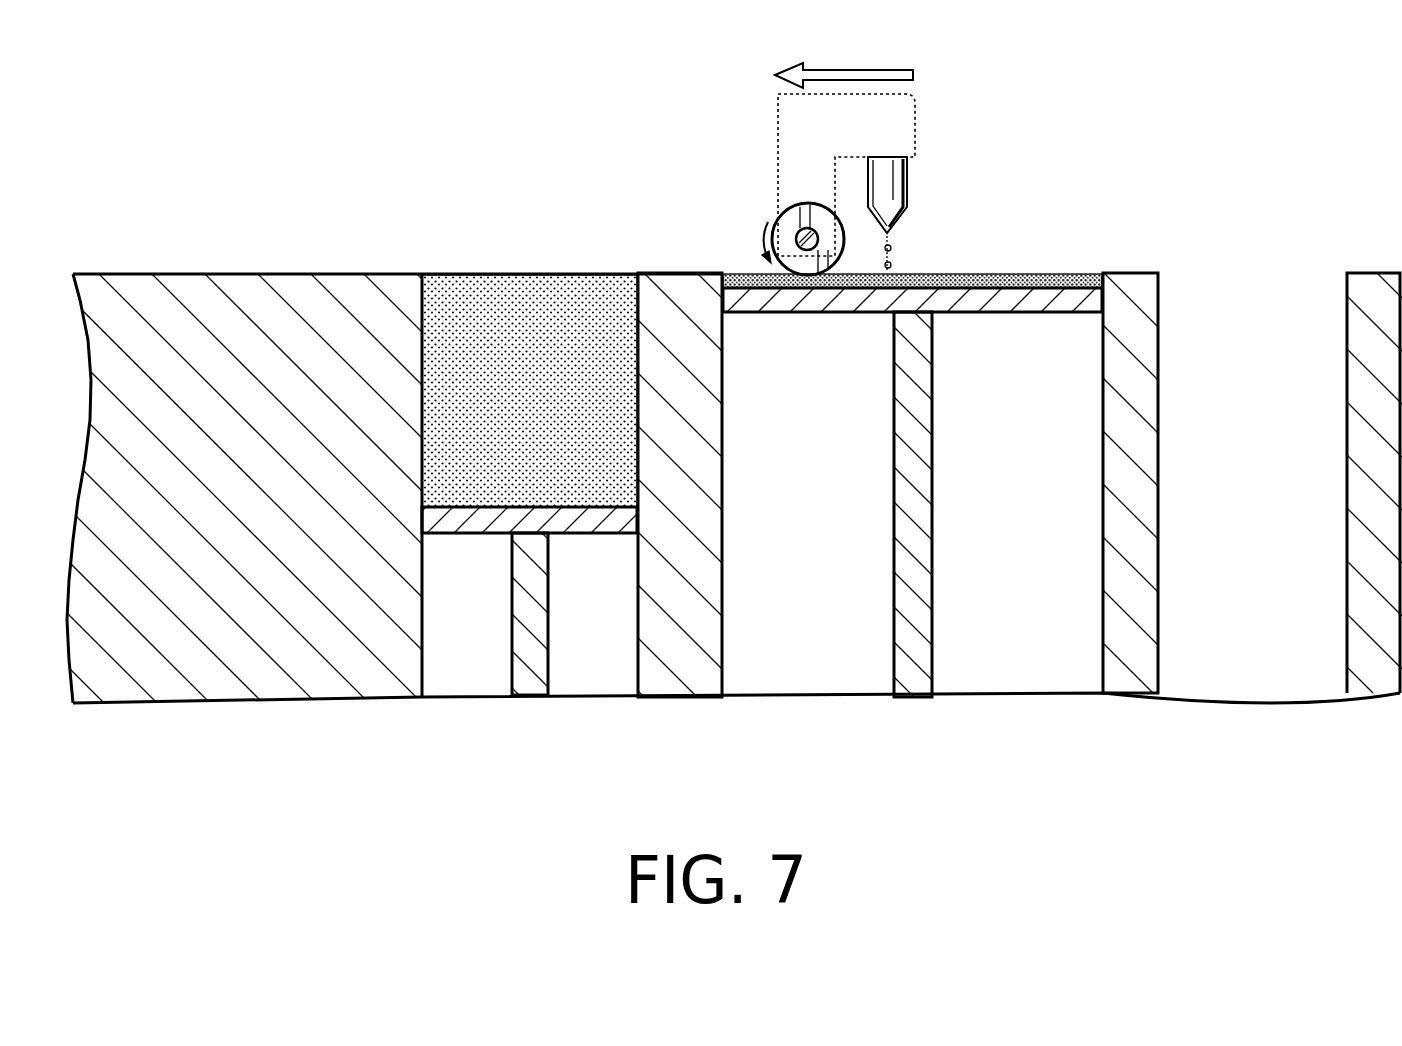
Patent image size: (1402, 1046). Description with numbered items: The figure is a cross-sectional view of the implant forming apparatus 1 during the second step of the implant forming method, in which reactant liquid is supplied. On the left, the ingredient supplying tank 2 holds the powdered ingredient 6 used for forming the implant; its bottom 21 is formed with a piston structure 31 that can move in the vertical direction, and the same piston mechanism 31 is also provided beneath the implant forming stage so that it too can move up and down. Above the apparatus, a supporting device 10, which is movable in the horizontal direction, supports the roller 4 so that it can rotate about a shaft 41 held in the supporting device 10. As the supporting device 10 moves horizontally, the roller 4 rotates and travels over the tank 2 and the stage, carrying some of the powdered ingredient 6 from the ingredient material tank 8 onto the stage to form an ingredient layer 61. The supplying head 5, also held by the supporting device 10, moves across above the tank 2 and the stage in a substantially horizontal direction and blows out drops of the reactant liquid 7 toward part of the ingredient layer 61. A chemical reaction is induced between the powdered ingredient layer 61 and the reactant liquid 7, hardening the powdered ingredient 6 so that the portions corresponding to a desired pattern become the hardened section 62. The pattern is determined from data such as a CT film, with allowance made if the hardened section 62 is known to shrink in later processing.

The implant forming apparatus 1 is at (1261, 98).
The ingredient supplying tank 2 is at (571, 318).
The roller 4 is at (762, 208).
The shaft 41 is at (818, 203).
The supplying head 5 is at (906, 178).
The powdered ingredient 6 is at (490, 290).
The ingredient layer 61 is at (1067, 277).
The hardened section 62 is at (932, 283).
The reactant liquid 7 is at (895, 264).
The ingredient material tank 8 is at (1260, 306).
The supporting device 10 is at (916, 108).
The bottom 21 is at (493, 520).
The piston structure 31 is at (908, 523).